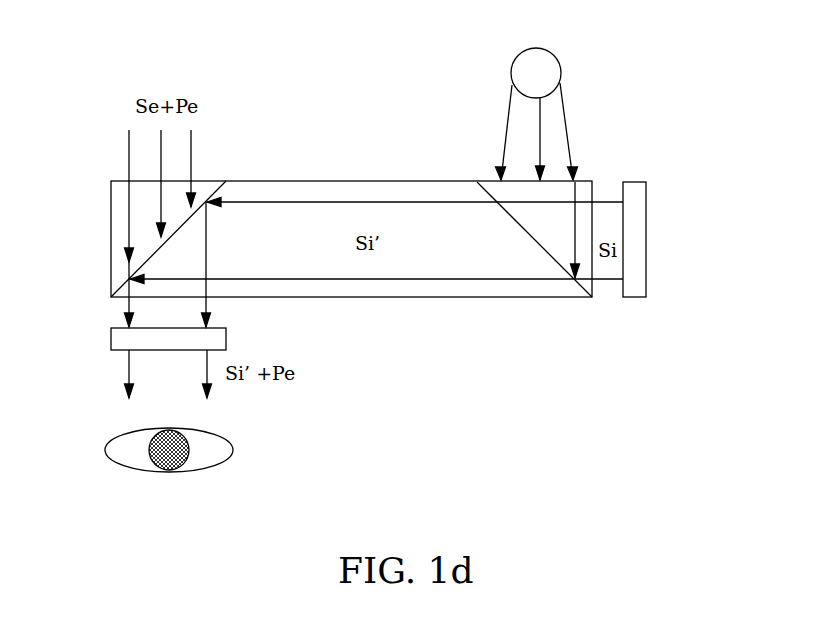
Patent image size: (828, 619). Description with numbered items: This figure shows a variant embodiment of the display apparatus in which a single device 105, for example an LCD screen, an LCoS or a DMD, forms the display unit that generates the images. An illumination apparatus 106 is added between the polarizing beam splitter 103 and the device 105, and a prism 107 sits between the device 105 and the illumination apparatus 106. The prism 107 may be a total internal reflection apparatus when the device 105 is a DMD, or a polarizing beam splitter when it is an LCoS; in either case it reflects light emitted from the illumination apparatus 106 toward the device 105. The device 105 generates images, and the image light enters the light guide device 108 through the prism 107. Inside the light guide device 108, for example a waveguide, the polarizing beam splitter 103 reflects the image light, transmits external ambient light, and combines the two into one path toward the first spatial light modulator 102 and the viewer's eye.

The first spatial light modulator 102 is at (123, 339).
The polarizing beam splitter 103 is at (226, 181).
The device 105 is at (646, 230).
The illumination apparatus 106 is at (555, 65).
The prism 107 is at (518, 228).
The light guide device 108 is at (345, 181).